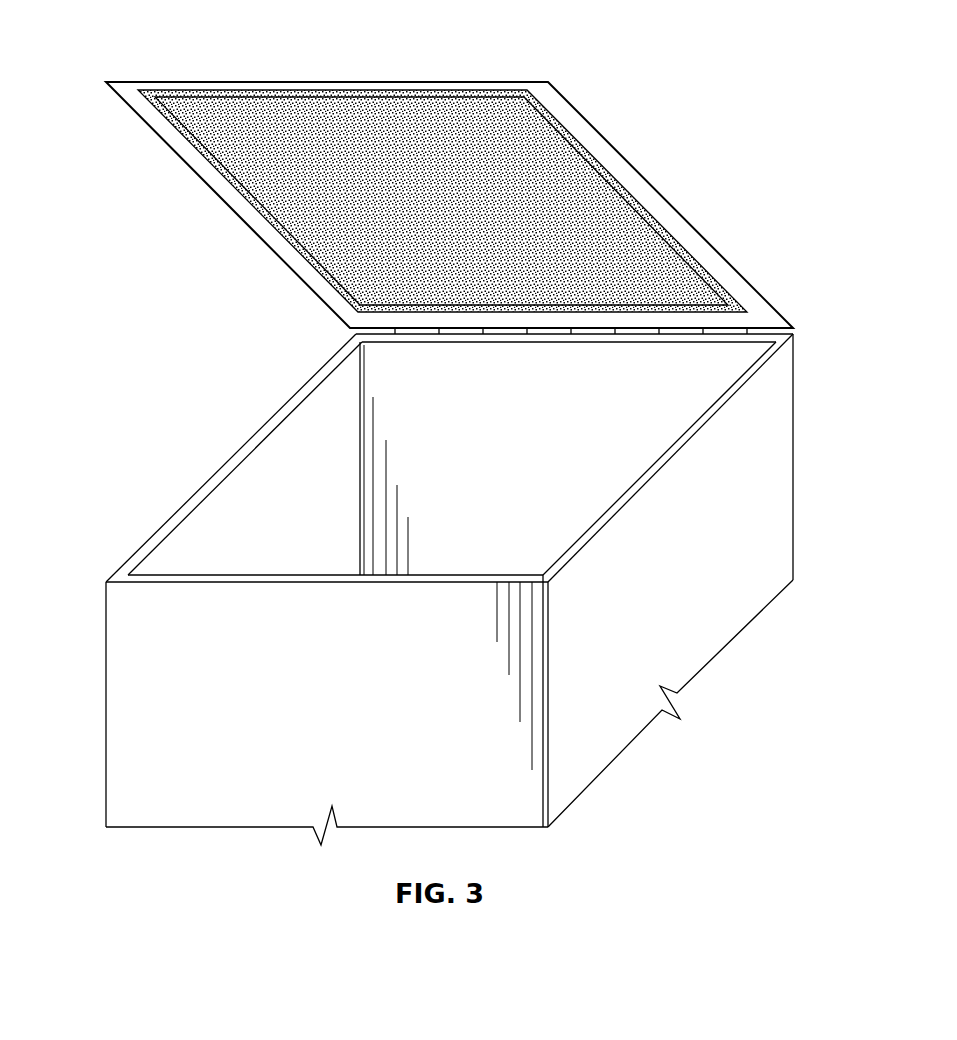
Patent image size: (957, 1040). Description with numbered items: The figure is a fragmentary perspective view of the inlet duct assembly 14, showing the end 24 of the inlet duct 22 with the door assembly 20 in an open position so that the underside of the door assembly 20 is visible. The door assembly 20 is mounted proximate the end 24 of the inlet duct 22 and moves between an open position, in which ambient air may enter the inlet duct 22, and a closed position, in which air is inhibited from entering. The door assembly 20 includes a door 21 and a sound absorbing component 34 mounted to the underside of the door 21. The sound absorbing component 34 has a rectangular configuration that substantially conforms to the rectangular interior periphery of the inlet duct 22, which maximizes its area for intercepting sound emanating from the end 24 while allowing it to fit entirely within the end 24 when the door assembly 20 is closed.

The inlet duct assembly 14 is at (464, 589).
The door assembly 20 is at (449, 174).
The door 21 is at (325, 82).
The inlet duct 22 is at (106, 803).
The end 24 is at (106, 630).
The sound absorbing component 34 is at (567, 171).